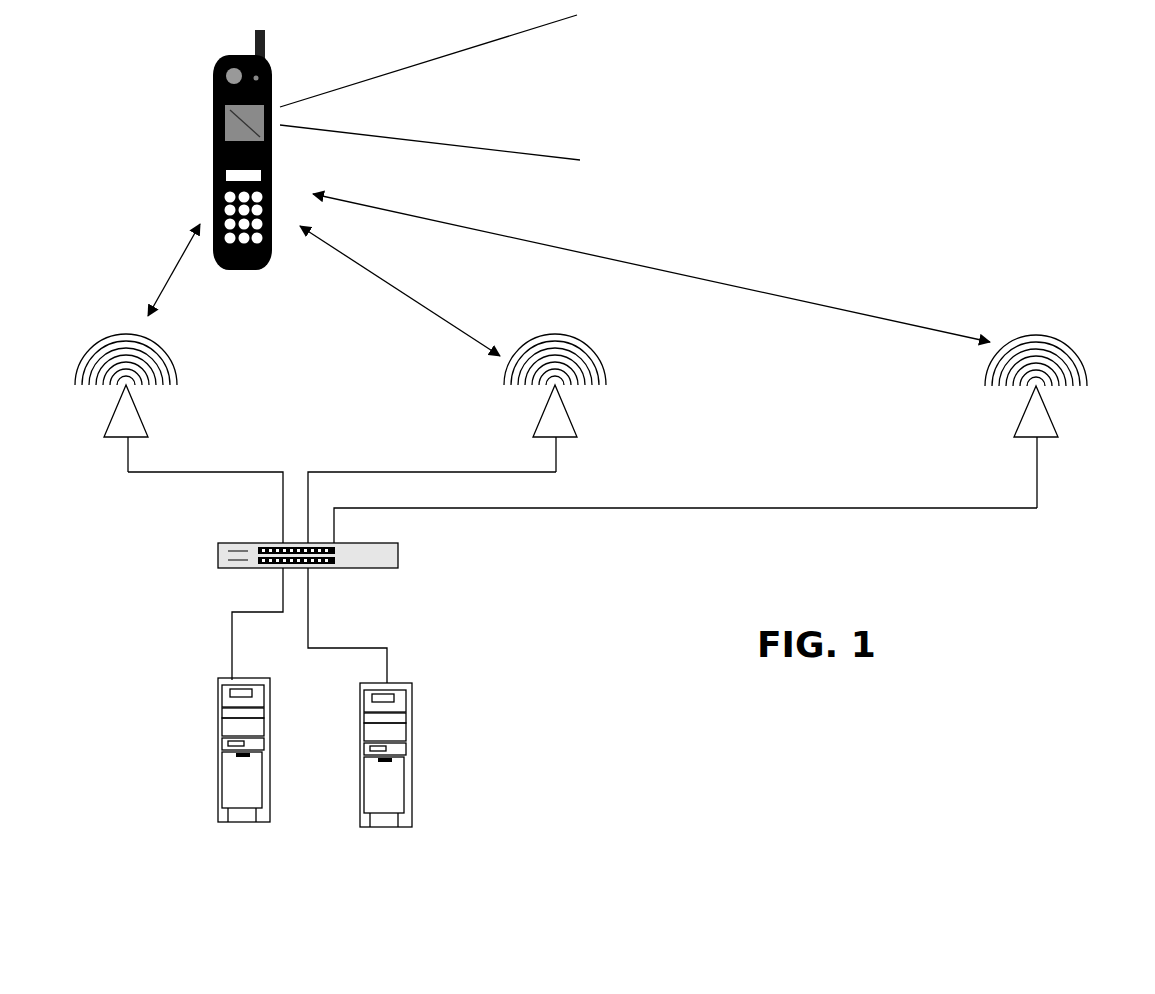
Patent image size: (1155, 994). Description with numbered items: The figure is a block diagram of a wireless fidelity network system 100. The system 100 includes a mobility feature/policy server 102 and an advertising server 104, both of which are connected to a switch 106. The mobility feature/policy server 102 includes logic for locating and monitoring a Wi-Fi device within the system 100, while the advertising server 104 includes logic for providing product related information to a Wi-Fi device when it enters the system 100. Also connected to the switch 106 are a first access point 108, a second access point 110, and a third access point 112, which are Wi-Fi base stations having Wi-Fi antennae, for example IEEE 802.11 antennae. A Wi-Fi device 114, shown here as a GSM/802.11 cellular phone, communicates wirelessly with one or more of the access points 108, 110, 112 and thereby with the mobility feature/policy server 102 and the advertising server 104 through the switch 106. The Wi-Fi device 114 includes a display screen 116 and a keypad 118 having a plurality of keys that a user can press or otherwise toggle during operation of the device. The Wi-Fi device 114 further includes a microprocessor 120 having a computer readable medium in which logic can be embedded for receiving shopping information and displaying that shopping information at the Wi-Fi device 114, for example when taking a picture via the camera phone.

The Wi-Fi network system 100 is at (688, 186).
The mobility feature/policy server 102 is at (220, 785).
The advertising server 104 is at (413, 775).
The switch 106 is at (393, 556).
The first access point 108 is at (133, 424).
The second access point 110 is at (562, 416).
The third access point 112 is at (1038, 424).
The Wi-Fi device 114 is at (213, 137).
The display screen 116 is at (272, 153).
The keypad 118 is at (270, 243).
The microprocessor 120 is at (198, 176).